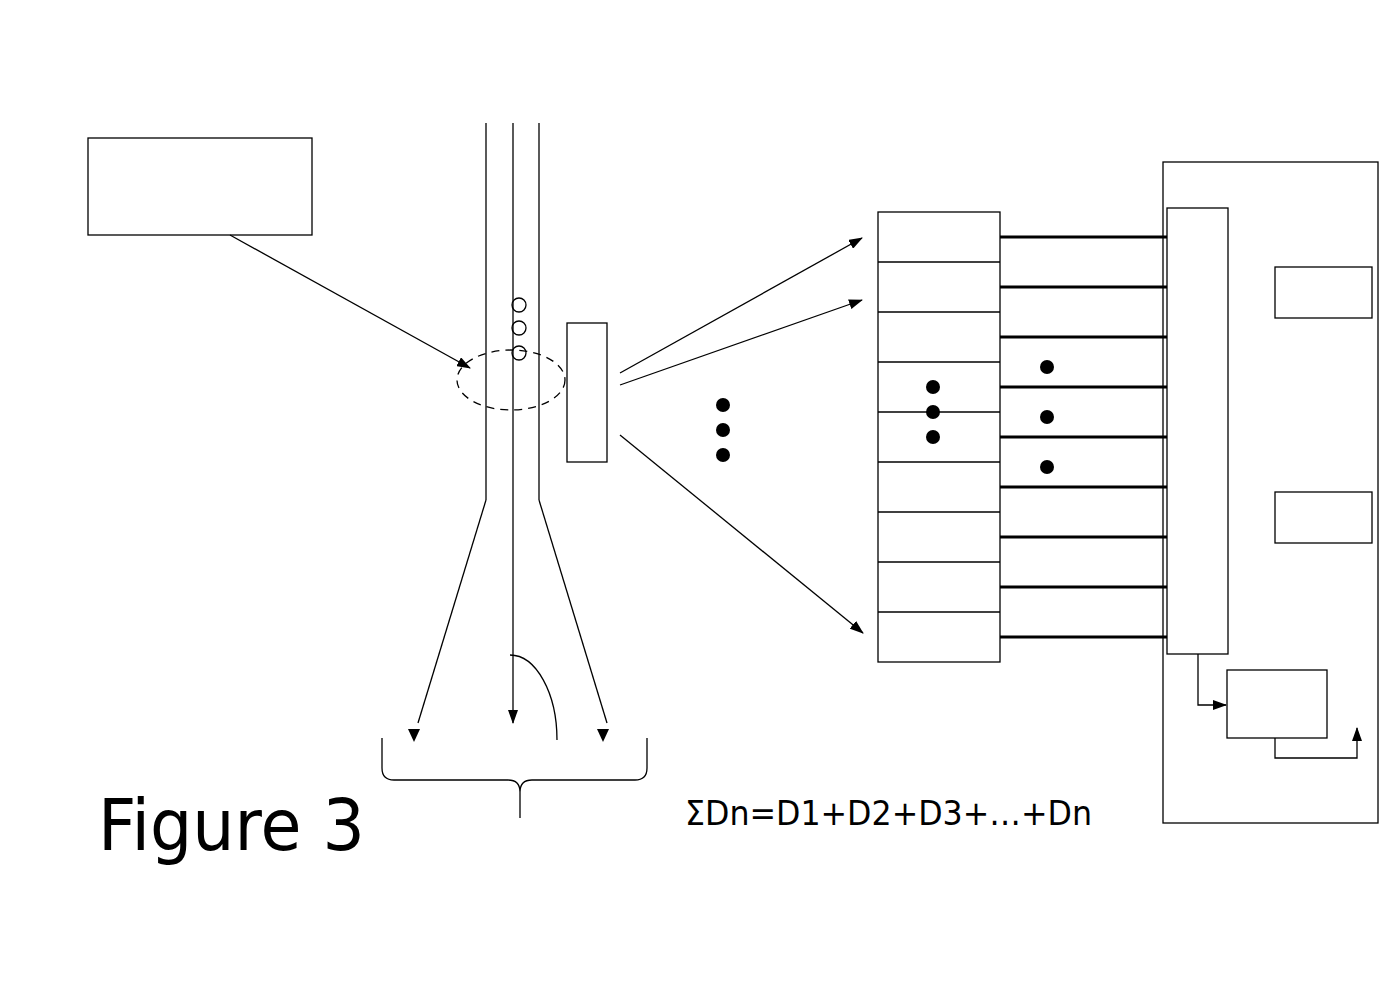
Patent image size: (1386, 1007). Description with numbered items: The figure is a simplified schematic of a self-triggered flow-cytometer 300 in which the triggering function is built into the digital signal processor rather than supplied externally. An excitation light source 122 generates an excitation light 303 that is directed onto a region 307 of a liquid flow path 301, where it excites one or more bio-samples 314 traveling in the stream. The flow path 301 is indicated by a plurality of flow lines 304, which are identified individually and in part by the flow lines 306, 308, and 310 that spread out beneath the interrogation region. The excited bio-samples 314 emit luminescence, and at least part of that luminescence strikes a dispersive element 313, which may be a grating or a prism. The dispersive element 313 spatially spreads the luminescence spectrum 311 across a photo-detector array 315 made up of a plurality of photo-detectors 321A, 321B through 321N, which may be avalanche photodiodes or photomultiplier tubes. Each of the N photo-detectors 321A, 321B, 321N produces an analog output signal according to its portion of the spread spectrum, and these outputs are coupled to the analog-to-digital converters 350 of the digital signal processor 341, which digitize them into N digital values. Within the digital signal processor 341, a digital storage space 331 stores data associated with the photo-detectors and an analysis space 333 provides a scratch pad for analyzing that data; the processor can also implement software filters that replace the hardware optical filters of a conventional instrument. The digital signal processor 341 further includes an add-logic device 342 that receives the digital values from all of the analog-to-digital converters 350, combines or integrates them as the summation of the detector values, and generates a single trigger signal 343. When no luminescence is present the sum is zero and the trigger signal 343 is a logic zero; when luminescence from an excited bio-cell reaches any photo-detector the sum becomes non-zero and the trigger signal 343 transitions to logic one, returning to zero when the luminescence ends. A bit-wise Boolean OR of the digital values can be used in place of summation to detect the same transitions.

The self-triggered flow-cytometer 300 is at (1123, 87).
The excitation light source 122 is at (312, 138).
The excitation light 303 is at (322, 290).
The region 307 is at (468, 352).
The flow path 301 is at (512, 381).
The flow line 306 is at (418, 713).
The flow line 310 is at (587, 662).
The flow line 308 is at (541, 714).
The flow lines 304 is at (514, 793).
The bio-samples 314 is at (526, 350).
The dispersive element 313 is at (588, 462).
The luminescence spectrum 311 is at (730, 255).
The photo-detector array 315 is at (878, 212).
The photo-detector 321A is at (1001, 226).
The photo-detector 321B is at (1001, 273).
The photo-detector 321N is at (1001, 661).
The digital signal processor 341 is at (1177, 157).
The analog-to-digital converters 350 is at (1228, 208).
The digital storage space 331 is at (1323, 292).
The analysis space 333 is at (1323, 517).
The add-logic device 342 is at (1250, 670).
The trigger signal 343 is at (1338, 760).